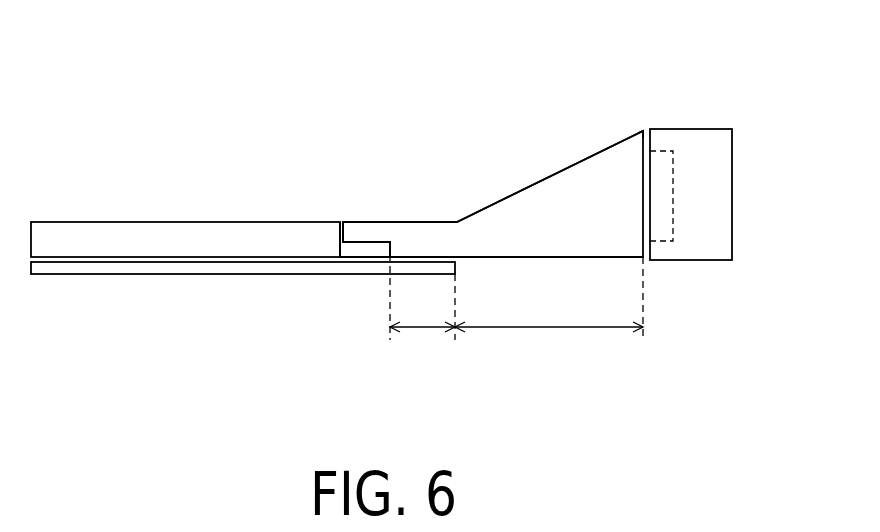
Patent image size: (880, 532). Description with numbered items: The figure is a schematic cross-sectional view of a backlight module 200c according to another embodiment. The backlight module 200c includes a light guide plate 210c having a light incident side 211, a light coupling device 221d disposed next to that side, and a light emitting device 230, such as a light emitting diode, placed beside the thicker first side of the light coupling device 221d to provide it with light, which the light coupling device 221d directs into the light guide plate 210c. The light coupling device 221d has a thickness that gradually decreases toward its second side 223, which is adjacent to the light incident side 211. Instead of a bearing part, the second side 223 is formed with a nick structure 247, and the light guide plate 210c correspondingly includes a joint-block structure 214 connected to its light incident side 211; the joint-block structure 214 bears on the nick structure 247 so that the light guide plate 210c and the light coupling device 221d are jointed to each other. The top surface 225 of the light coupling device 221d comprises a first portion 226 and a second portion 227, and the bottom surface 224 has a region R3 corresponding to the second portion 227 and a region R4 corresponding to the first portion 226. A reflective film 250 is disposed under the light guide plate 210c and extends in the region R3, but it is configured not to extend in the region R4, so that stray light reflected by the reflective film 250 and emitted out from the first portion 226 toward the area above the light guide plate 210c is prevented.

The backlight module 200c is at (832, 355).
The light guide plate 210c is at (143, 222).
The light incident side 211 is at (338, 238).
The joint-block structure 214 is at (371, 250).
The second side 223 is at (354, 234).
The bottom surface 224 is at (595, 258).
The top surface 225 is at (555, 68).
The first portion 226 is at (517, 190).
The second portion 227 is at (432, 221).
The light coupling device 221d is at (642, 133).
The light emitting device 230 is at (713, 198).
The nick structure 247 is at (364, 252).
The reflective film 250 is at (141, 266).
The region R3 is at (422, 309).
The region R4 is at (549, 316).